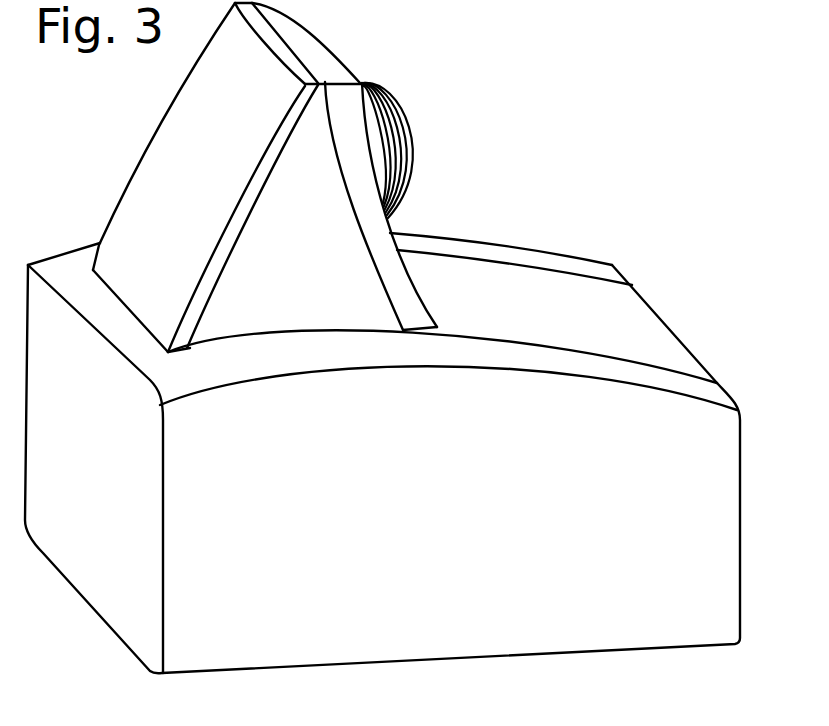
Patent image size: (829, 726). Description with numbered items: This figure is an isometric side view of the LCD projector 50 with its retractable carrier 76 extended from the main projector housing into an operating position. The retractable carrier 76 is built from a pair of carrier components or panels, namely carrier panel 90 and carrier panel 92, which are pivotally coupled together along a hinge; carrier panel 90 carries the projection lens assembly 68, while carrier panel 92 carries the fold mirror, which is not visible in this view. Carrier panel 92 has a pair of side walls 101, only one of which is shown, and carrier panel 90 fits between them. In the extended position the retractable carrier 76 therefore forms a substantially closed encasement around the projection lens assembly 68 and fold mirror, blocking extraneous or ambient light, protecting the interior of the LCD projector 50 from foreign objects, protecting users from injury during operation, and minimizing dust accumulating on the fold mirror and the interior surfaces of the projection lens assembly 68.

The LCD projector 50 is at (476, 203).
The retractable carrier 76 is at (134, 167).
The side walls 101 is at (340, 275).
The carrier panel 90 is at (392, 265).
The projection lens assembly 68 is at (388, 78).
The carrier panel 92 is at (253, 307).